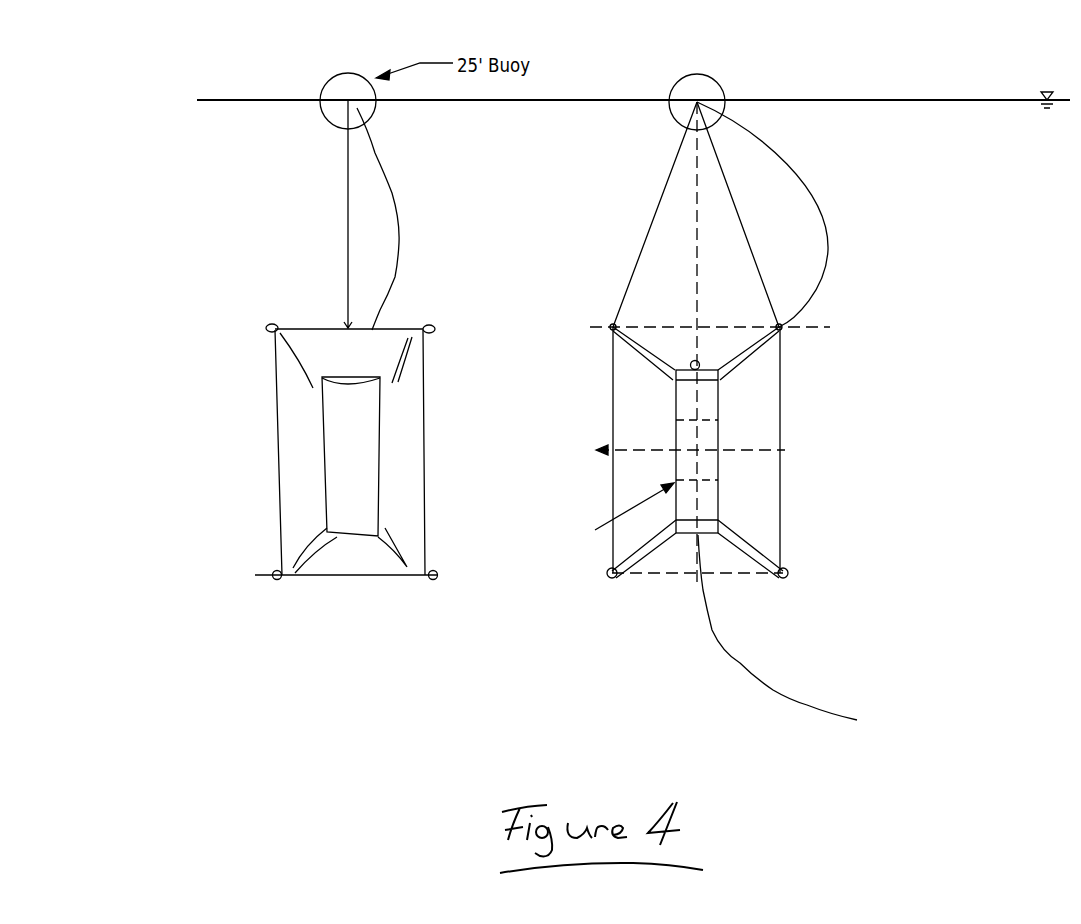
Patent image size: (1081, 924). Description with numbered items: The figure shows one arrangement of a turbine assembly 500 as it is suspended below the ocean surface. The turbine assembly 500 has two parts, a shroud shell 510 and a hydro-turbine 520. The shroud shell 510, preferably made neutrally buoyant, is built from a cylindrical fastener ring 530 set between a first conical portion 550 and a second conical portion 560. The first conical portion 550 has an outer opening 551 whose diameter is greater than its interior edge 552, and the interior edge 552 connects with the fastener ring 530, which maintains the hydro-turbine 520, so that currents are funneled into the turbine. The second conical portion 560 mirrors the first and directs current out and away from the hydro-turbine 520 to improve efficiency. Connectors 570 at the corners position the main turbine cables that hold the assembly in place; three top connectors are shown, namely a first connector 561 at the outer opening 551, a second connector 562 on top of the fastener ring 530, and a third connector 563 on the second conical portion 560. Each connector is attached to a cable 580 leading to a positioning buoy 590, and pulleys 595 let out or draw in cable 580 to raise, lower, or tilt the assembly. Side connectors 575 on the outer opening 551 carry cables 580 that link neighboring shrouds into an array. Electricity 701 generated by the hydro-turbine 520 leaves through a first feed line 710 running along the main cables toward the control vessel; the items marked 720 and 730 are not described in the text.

The turbine assembly 500 is at (206, 513).
The shroud shell 510 is at (422, 475).
The hydro-turbine 520 is at (707, 441).
The fastener ring 530 is at (343, 507).
The first conical portion 550 is at (630, 533).
The outer opening 551 is at (612, 487).
The interior edge 552 is at (676, 401).
The second conical portion 560 is at (763, 373).
The first connector 561 is at (605, 320).
The second connector 562 is at (699, 360).
The third connector 563 is at (783, 320).
The connectors 570 is at (431, 326).
The side connectors 575 is at (431, 328).
The cable 580 is at (697, 208).
The positioning buoy 590 is at (357, 73).
The pulleys 595 is at (613, 327).
The electricity 701 is at (570, 100).
The first feed line 710 is at (779, 158).
The buoy attachment 720 is at (650, 100).
The water level 730 is at (577, 83).